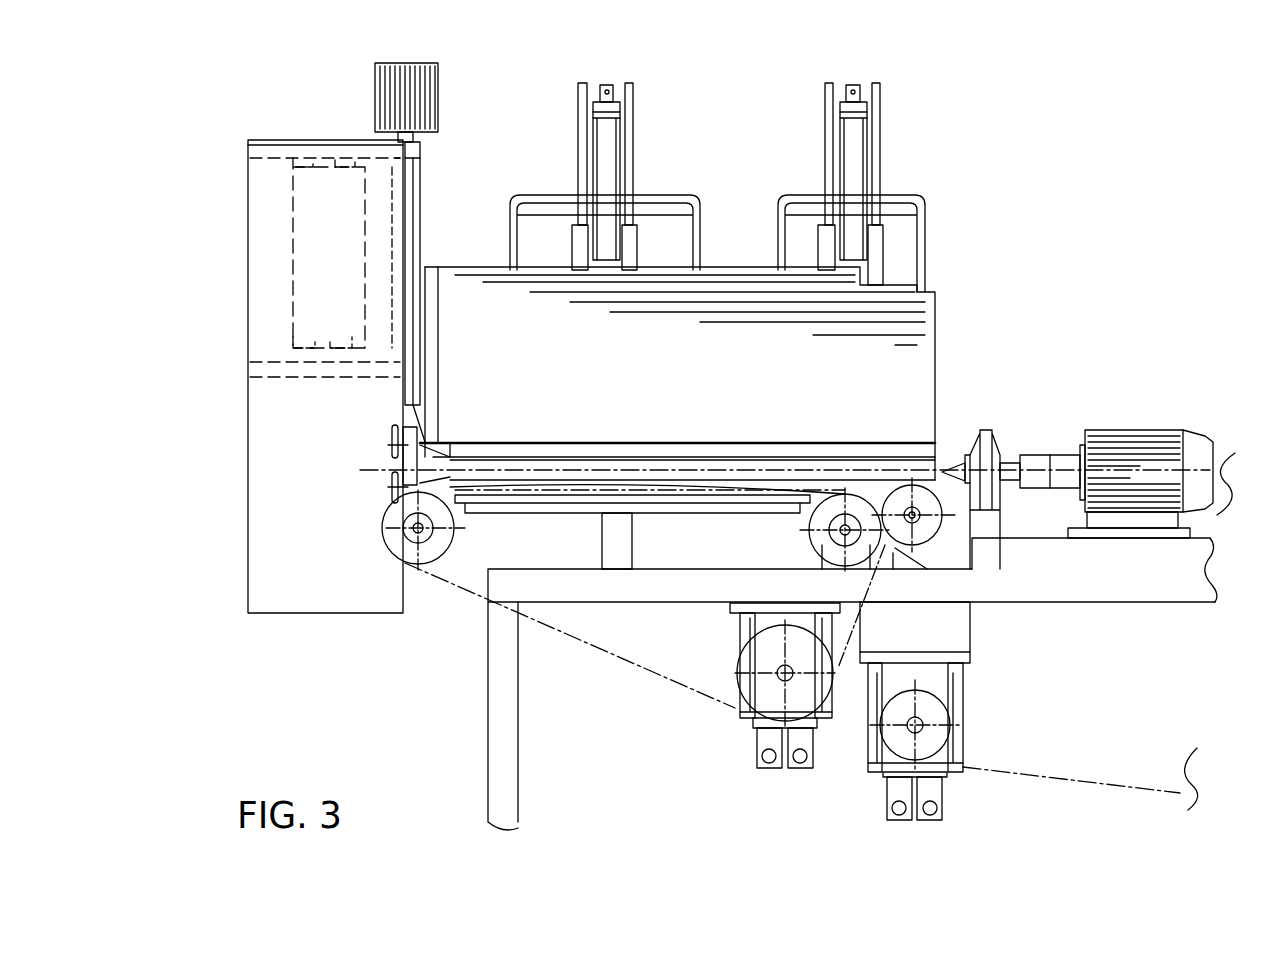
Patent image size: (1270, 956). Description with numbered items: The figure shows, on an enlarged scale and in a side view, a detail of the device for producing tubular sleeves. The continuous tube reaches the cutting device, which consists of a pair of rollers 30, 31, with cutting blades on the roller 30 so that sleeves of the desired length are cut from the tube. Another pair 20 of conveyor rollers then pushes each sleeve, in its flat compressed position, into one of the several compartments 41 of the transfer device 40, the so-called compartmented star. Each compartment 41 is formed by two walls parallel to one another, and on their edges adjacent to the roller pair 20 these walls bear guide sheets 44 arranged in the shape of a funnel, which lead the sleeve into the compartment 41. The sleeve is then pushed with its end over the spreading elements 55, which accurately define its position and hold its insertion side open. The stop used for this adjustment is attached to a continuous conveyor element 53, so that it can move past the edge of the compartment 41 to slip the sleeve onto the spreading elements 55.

The roller 30 is at (343, 324).
The roller 31 is at (328, 227).
The pair of conveyor rollers 20 is at (413, 210).
The compartment 41 is at (897, 373).
The guide sheets 44 is at (412, 405).
The spreading elements 55 is at (951, 470).
The transfer device 40 is at (647, 548).
The continuous conveyor element 53 is at (675, 677).